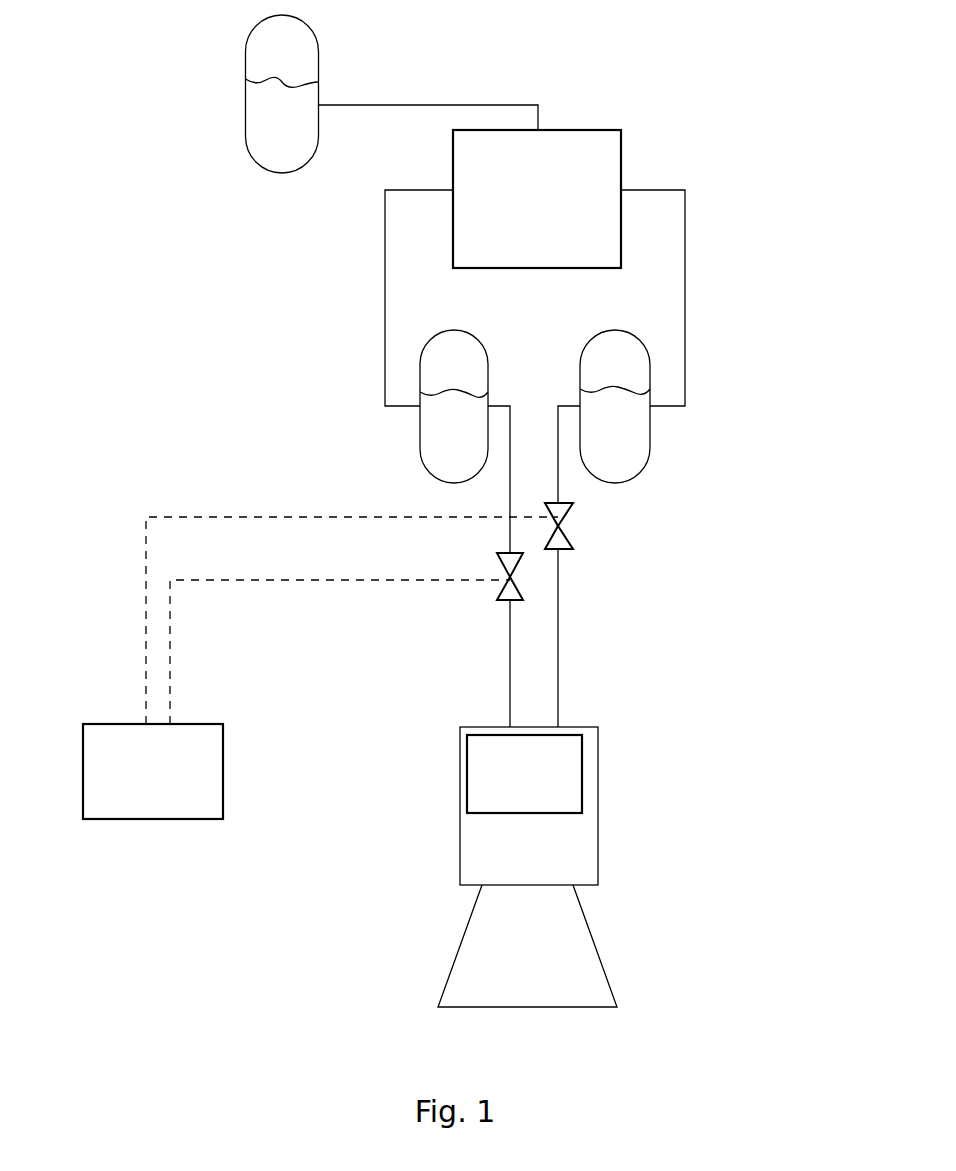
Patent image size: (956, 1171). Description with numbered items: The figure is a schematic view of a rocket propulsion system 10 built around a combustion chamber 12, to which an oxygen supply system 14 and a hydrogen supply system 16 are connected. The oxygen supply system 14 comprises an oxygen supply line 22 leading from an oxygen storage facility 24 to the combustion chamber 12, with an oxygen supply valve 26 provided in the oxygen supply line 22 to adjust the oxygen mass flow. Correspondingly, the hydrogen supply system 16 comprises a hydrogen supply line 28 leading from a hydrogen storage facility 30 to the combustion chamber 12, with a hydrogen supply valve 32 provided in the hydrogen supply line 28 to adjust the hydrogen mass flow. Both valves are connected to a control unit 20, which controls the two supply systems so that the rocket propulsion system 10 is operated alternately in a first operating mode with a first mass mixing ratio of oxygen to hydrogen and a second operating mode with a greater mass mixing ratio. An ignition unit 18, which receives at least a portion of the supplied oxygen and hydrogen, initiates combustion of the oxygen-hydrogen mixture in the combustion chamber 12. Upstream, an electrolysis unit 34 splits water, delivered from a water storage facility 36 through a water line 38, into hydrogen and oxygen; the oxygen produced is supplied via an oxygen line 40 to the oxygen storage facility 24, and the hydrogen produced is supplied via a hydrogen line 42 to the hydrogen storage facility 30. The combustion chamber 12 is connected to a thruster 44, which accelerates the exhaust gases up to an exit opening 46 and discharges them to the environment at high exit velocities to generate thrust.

The rocket propulsion system 10 is at (126, 68).
The combustion chamber 12 is at (598, 862).
The oxygen supply system 14 is at (342, 433).
The hydrogen supply system 16 is at (735, 403).
The ignition unit 18 is at (563, 770).
The control unit 20 is at (112, 803).
The oxygen supply line 22 is at (510, 622).
The oxygen storage facility 24 is at (432, 455).
The oxygen supply valve 26 is at (523, 590).
The hydrogen supply line 28 is at (558, 565).
The hydrogen storage facility 30 is at (630, 455).
The hydrogen supply valve 32 is at (568, 532).
The electrolysis unit 34 is at (608, 150).
The water storage facility 36 is at (268, 143).
The water line 38 is at (376, 105).
The oxygen line 40 is at (385, 287).
The hydrogen line 42 is at (688, 235).
The thruster 44 is at (580, 968).
The exit opening 46 is at (555, 1007).